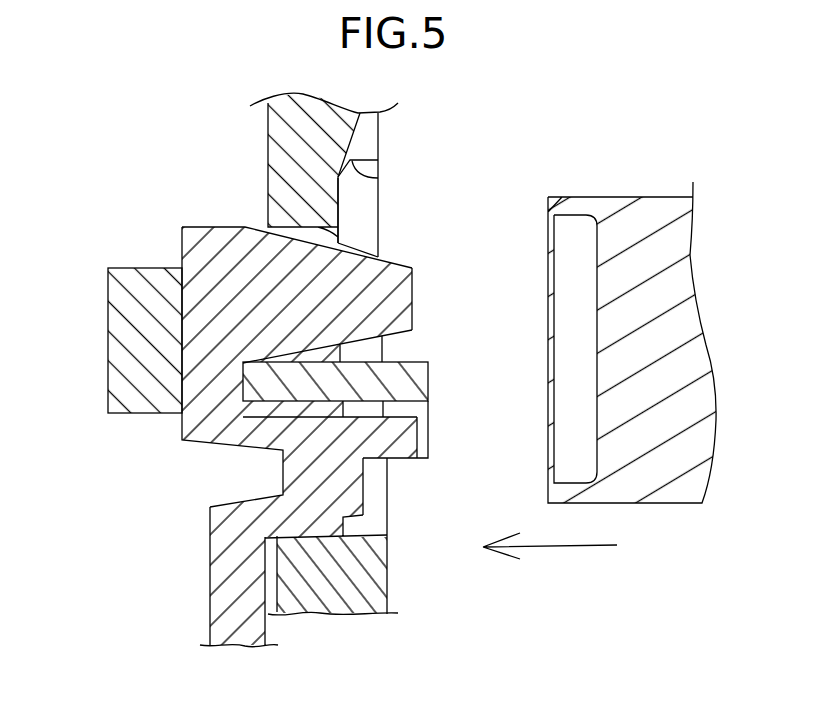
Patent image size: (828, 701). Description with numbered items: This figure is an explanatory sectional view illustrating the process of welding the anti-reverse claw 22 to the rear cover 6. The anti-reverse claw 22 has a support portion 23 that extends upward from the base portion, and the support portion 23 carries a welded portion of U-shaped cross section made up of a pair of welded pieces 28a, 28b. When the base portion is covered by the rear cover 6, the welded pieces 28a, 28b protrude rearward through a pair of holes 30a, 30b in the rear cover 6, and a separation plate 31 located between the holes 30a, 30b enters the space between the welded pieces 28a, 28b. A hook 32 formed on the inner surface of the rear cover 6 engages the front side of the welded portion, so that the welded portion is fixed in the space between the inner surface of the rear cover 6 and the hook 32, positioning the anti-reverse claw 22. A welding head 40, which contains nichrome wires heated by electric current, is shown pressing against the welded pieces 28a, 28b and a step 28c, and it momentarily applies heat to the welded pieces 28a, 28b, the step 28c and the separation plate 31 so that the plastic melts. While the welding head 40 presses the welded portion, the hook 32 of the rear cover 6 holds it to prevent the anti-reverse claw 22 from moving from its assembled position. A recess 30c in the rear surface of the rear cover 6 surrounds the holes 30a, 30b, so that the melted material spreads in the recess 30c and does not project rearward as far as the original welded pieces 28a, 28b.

The rear cover 6 is at (397, 150).
The anti-reverse claw 22 is at (204, 218).
The support portion 23 is at (210, 589).
The welded piece 28a is at (413, 287).
The welded piece 28b is at (428, 432).
The step 28c is at (365, 483).
The hole 30a is at (380, 222).
The hole 30b is at (343, 523).
The recess 30c is at (380, 176).
The separation plate 31 is at (430, 385).
The hook 32 is at (143, 268).
The welding head 40 is at (627, 197).